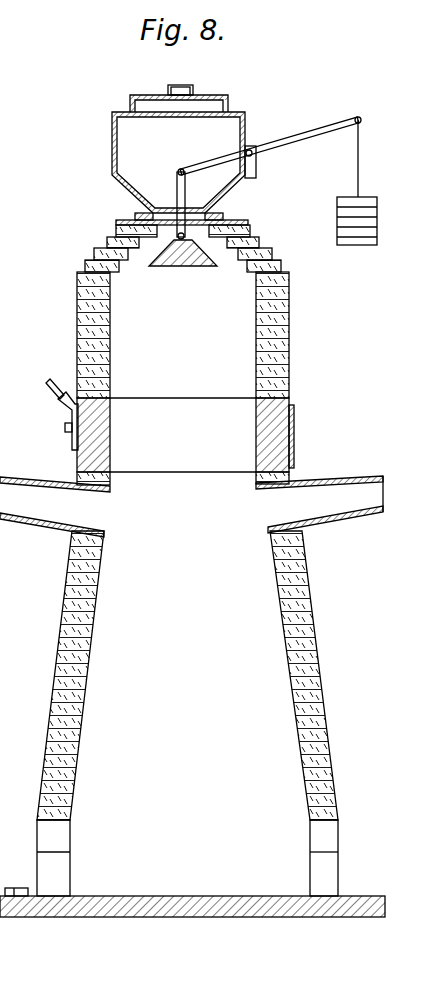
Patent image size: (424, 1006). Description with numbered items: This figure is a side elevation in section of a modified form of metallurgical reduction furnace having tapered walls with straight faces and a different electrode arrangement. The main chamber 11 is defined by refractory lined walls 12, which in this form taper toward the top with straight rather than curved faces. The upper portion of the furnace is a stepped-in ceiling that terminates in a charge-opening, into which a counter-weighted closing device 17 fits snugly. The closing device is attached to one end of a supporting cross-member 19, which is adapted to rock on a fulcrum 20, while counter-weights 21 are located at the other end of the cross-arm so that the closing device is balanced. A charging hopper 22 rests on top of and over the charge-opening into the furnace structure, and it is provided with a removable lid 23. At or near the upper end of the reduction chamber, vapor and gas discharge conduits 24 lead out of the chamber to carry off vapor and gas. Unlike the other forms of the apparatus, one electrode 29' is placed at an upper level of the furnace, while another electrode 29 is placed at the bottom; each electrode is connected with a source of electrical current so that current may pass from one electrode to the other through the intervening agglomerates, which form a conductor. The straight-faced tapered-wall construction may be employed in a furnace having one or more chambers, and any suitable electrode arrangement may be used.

The main chamber 11 is at (185, 402).
The refractory lined walls 12 is at (82, 716).
The counter-weighted closing device 17 is at (190, 268).
The supporting cross-member 19 is at (318, 120).
The fulcrum 20 is at (250, 146).
The counter-weights 21 is at (337, 205).
The charging hopper 22 is at (112, 150).
The removable lid 23 is at (130, 100).
The vapor and gas discharge conduits 24 is at (33, 525).
The electrode 29 is at (192, 886).
The electrode 29' is at (47, 419).